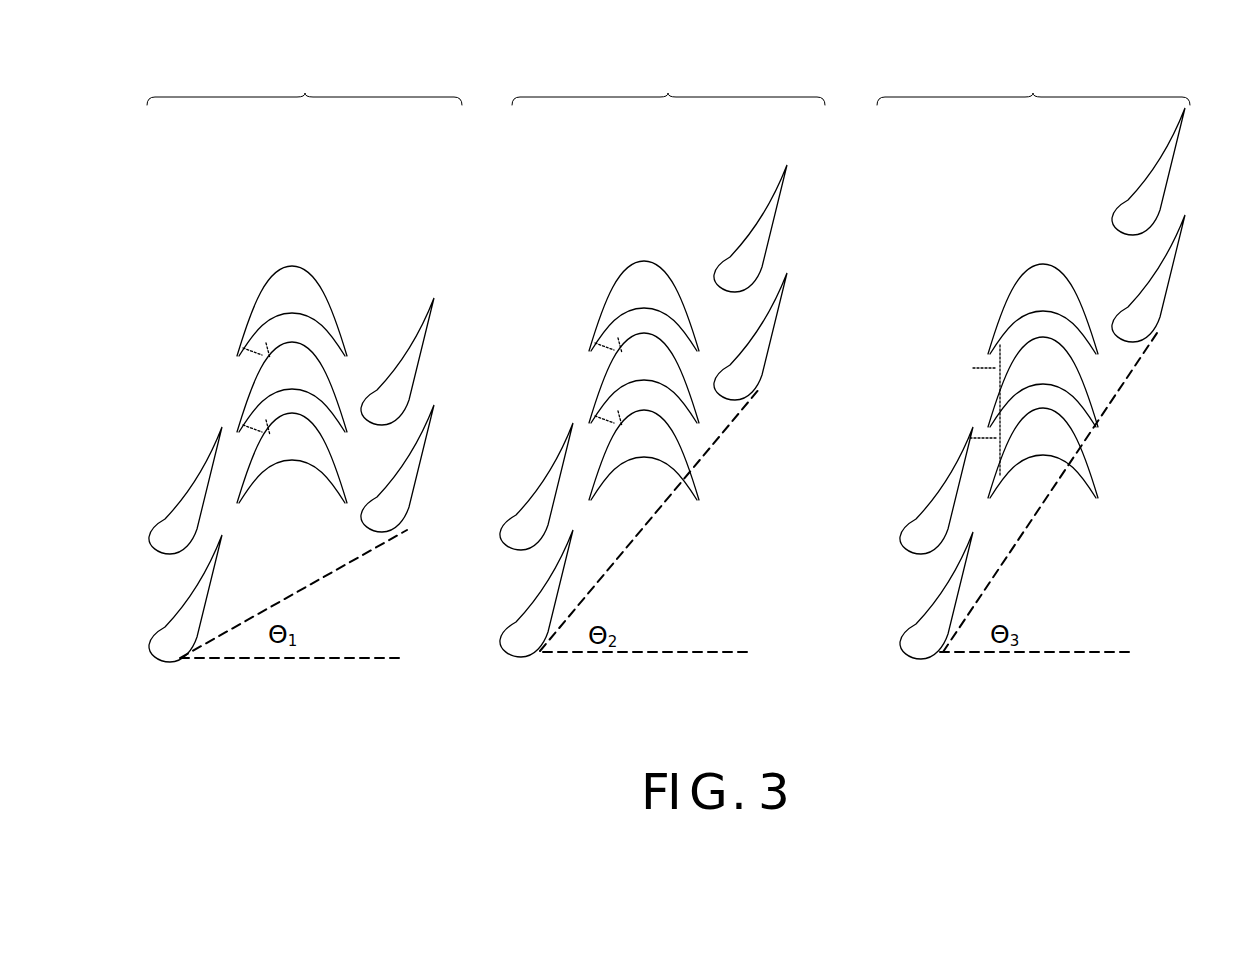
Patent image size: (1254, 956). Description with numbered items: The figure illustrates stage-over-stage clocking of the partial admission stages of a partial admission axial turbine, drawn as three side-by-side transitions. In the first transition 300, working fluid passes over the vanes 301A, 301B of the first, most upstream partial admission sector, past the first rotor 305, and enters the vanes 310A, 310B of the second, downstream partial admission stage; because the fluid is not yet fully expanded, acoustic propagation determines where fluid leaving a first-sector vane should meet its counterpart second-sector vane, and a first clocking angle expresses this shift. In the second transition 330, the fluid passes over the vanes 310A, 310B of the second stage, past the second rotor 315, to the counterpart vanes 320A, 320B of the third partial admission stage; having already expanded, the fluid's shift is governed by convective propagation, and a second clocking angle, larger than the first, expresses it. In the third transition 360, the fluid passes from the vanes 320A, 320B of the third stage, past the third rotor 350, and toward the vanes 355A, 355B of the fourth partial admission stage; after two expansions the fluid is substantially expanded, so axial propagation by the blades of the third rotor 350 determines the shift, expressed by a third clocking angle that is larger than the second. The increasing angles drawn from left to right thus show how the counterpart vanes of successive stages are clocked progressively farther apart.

The first transition 300 is at (304, 97).
The second transition 330 is at (668, 97).
The third transition 360 is at (1033, 97).
The first rotor 305 is at (273, 281).
The second rotor 315 is at (612, 293).
The third rotor 350 is at (1010, 298).
The vane of first partial admission sector 301A is at (165, 516).
The vane of first partial admission sector 301B is at (165, 624).
The vane of second partial admission stage 310A is at (431, 328).
The vane of second partial admission stage 310B is at (431, 435).
The vane of third partial admission stage 320A is at (784, 200).
The vane of third partial admission stage 320B is at (784, 307).
The vane of fourth partial admission stage 355A is at (1172, 183).
The vane of fourth partial admission stage 355B is at (1172, 291).